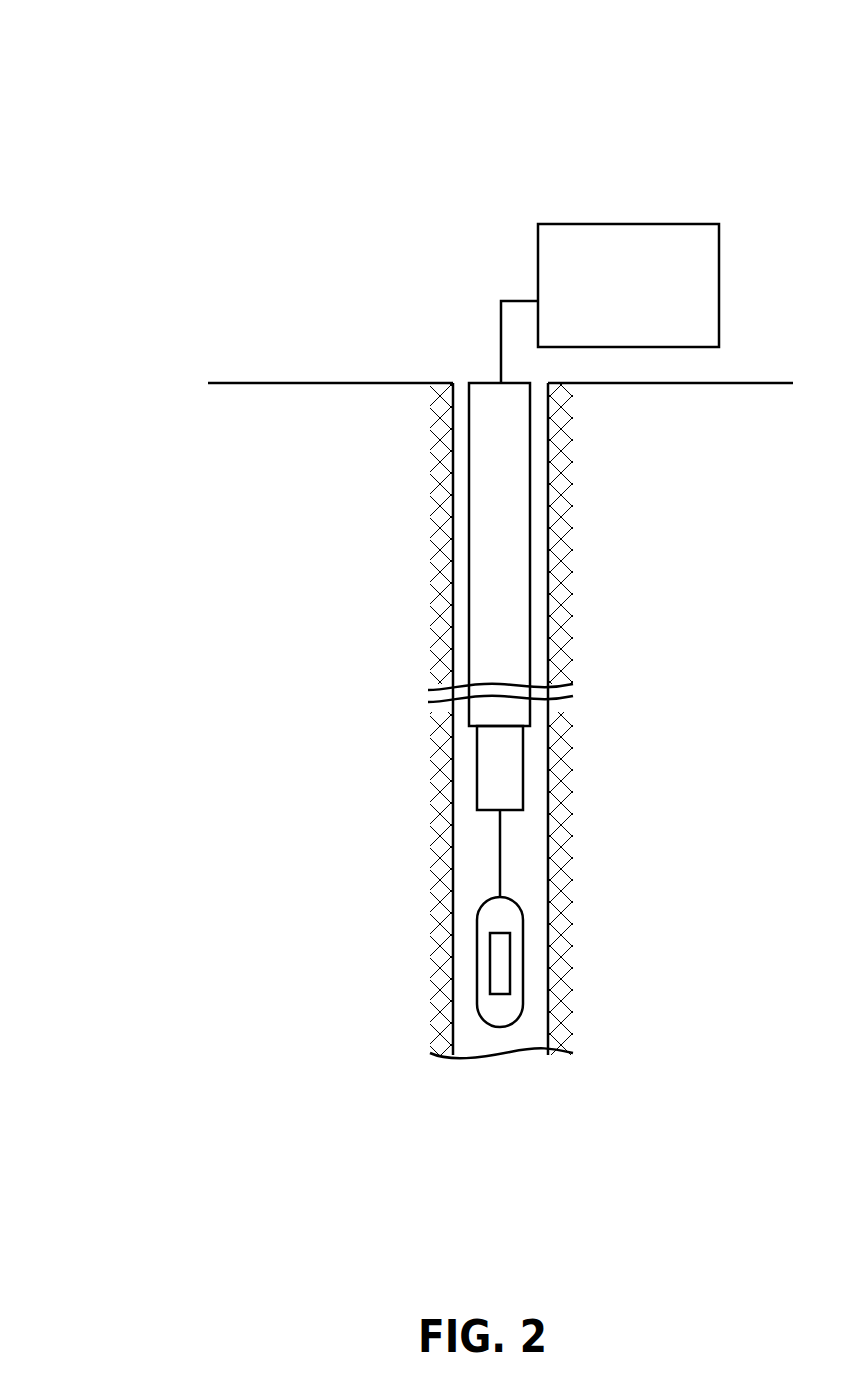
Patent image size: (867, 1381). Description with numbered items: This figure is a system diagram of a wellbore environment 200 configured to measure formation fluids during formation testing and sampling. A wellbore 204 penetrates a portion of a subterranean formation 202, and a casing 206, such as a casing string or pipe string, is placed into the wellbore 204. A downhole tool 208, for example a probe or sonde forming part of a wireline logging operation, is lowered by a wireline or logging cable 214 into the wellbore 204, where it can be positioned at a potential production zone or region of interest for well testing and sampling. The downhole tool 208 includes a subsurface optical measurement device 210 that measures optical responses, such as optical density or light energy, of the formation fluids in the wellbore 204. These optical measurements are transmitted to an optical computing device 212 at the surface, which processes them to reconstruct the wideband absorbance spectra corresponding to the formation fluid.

The wellbore environment 200 is at (124, 40).
The subterranean formation 202 is at (500, 452).
The wellbore 204 is at (610, 414).
The casing 206 is at (470, 471).
The downhole tool 208 is at (523, 918).
The subsurface optical measurement device 210 is at (505, 979).
The optical computing device 212 is at (610, 303).
The logging cable 214 is at (498, 842).